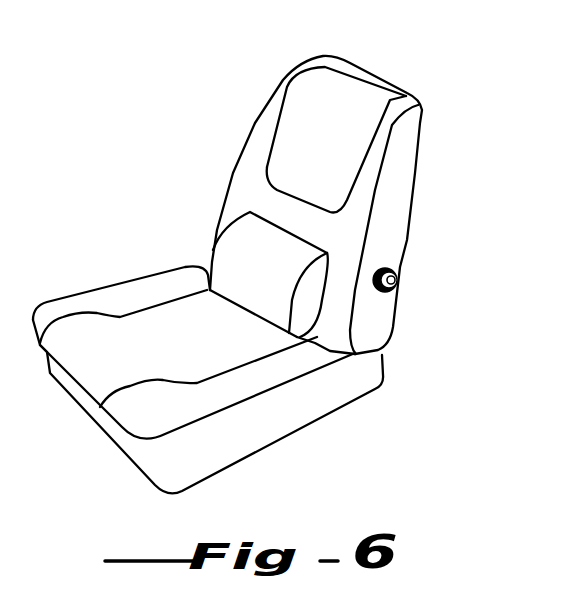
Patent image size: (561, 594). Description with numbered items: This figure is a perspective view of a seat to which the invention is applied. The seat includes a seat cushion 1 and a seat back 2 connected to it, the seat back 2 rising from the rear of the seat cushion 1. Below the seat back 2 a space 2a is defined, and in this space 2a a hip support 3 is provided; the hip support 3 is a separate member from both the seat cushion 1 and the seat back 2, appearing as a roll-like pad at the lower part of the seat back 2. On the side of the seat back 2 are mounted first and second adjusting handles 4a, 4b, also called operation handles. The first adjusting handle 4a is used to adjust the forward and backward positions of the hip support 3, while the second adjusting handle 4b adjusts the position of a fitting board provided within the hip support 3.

The seat cushion 1 is at (282, 427).
The seat back 2 is at (410, 173).
The space 2a is at (313, 345).
The hip support 3 is at (230, 240).
The first adjusting handle 4a is at (386, 268).
The second adjusting handle 4b is at (397, 282).